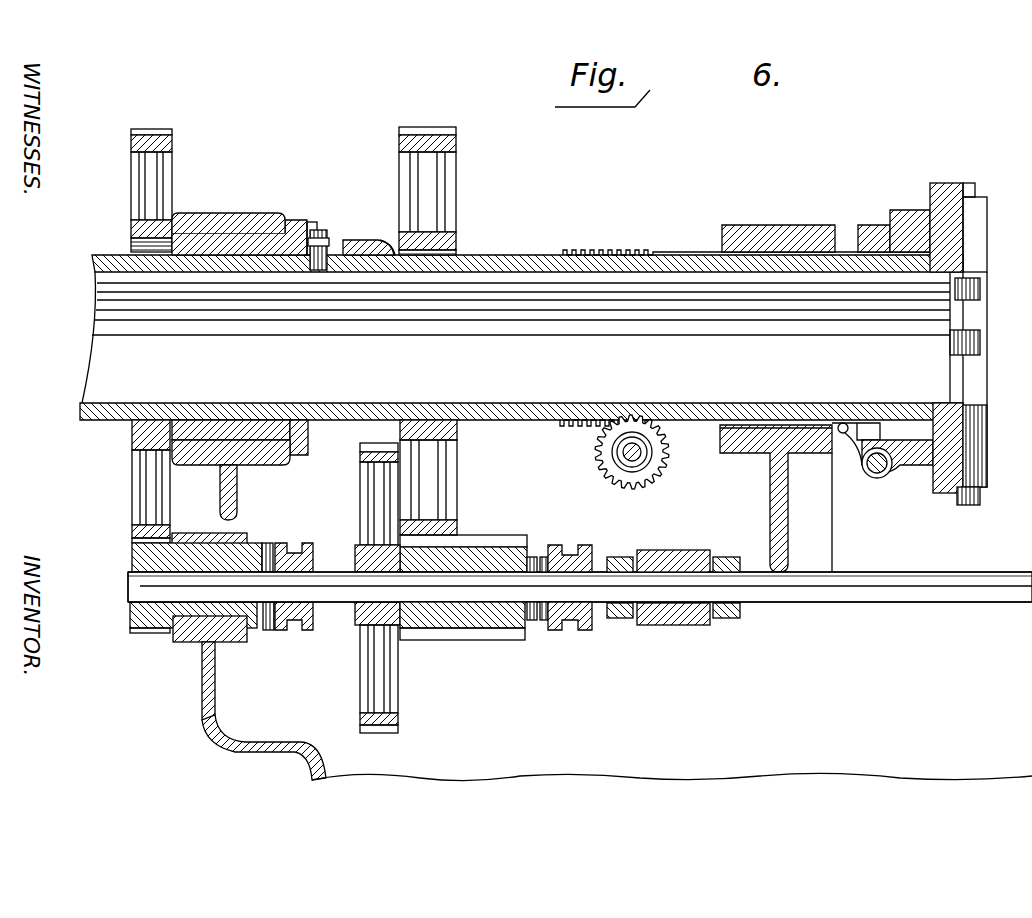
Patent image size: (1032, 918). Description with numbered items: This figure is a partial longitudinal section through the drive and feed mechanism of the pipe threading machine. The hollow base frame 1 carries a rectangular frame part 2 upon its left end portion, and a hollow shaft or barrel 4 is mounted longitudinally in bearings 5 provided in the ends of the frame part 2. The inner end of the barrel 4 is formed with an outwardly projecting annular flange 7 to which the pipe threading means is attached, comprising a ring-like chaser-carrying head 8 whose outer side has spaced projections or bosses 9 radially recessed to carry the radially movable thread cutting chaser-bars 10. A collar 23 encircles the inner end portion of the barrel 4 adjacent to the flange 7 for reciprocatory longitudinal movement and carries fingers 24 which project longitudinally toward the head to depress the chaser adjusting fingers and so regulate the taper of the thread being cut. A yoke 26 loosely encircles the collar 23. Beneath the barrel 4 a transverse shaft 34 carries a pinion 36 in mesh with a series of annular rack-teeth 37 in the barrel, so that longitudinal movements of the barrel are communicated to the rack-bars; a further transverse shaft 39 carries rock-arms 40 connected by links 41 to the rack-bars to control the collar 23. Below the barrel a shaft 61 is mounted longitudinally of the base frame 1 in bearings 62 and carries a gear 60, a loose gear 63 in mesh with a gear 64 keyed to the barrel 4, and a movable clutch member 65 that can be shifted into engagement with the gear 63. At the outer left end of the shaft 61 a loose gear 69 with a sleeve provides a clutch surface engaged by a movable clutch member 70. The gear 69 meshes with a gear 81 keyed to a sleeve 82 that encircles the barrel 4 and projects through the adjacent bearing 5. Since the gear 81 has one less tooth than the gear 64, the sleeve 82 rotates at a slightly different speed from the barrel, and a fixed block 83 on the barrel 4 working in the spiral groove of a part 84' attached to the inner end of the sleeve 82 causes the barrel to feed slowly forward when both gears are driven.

The hollow base frame 1 is at (278, 752).
The rectangular frame part 2 is at (240, 490).
The hollow shaft or barrel 4 is at (521, 338).
The bearings 5 is at (226, 437).
The annular flange 7 is at (940, 200).
The chaser-carrying head 8 is at (957, 185).
The projections or bosses 9 is at (976, 410).
The thread cutting chaser-bars 10 is at (972, 197).
The collar 23 is at (915, 224).
The fingers 24 is at (930, 472).
The yoke 26 is at (876, 240).
The shaft 34 is at (640, 456).
The pinion 36 is at (610, 476).
The annular rack-teeth 37 is at (583, 427).
The shaft 39 is at (879, 478).
The rock-arms 40 is at (846, 436).
The links 41 is at (833, 455).
The gear 60 is at (368, 503).
The shaft 61 is at (808, 592).
The bearings 62 is at (200, 647).
The loose gear 63 is at (478, 632).
The gear 64 is at (447, 492).
The movable clutch member 65 is at (580, 632).
The loose gear 69 is at (140, 632).
The movable clutch member 70 is at (300, 631).
The gear 81 is at (130, 472).
The sleeve 82 is at (190, 430).
The fixed block 83 is at (322, 272).
The part 84' is at (369, 227).